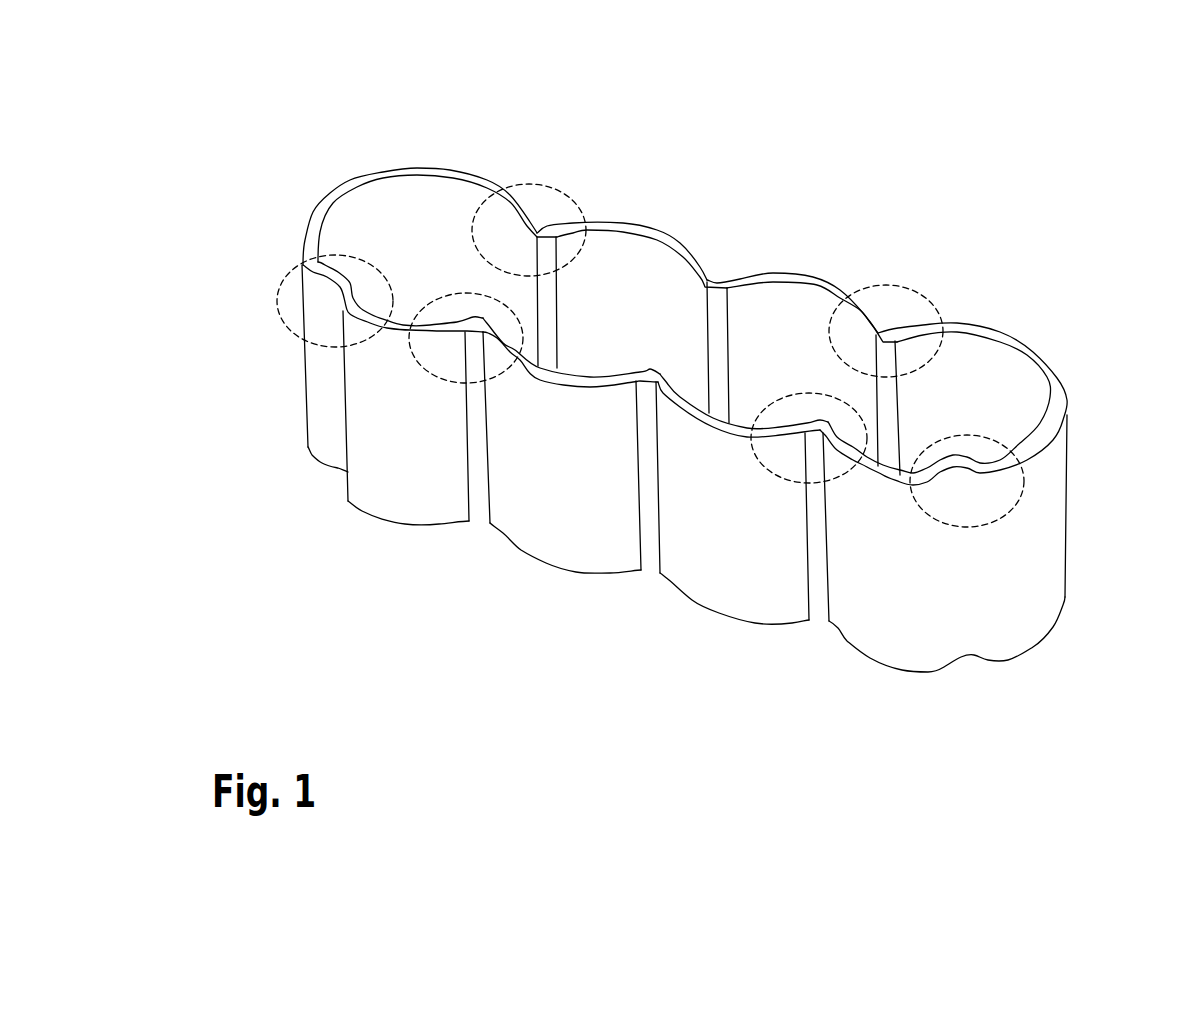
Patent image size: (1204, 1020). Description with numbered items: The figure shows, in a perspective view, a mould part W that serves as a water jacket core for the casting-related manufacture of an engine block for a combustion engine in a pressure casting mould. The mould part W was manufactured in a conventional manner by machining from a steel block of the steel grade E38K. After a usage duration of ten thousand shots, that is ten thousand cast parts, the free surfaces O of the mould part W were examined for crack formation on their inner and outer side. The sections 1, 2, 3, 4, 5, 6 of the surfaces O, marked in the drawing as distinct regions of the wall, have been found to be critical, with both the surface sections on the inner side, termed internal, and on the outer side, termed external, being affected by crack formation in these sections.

The mould part W is at (347, 153).
The free surfaces O is at (362, 403).
The section of the surfaces 1 is at (1008, 513).
The section of the surfaces 2 is at (766, 478).
The section of the surfaces 3 is at (888, 283).
The section of the surfaces 4 is at (442, 382).
The section of the surfaces 5 is at (541, 185).
The section of the surfaces 6 is at (277, 290).